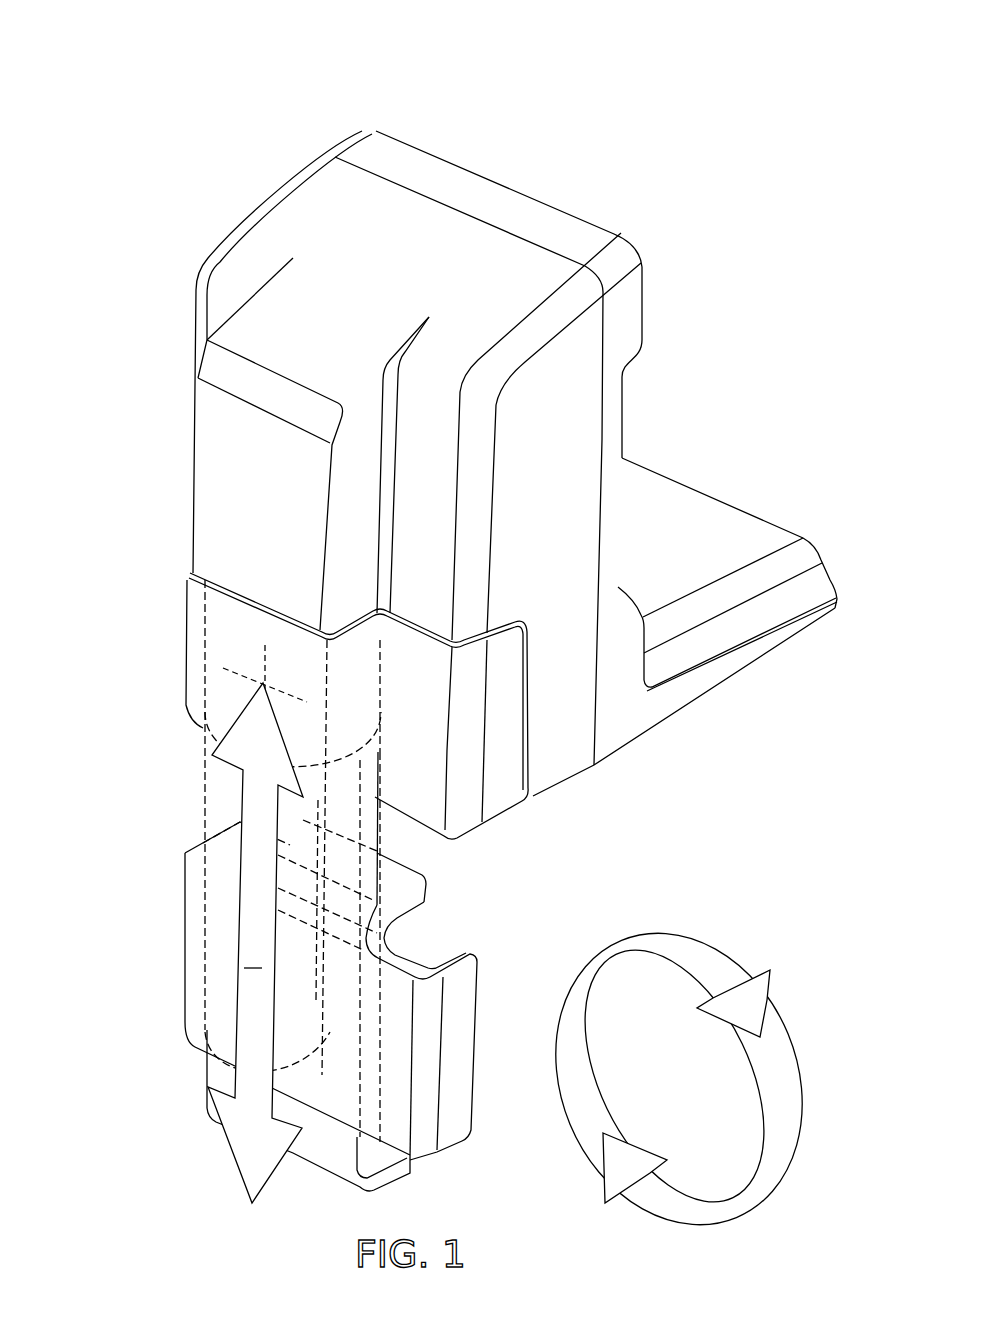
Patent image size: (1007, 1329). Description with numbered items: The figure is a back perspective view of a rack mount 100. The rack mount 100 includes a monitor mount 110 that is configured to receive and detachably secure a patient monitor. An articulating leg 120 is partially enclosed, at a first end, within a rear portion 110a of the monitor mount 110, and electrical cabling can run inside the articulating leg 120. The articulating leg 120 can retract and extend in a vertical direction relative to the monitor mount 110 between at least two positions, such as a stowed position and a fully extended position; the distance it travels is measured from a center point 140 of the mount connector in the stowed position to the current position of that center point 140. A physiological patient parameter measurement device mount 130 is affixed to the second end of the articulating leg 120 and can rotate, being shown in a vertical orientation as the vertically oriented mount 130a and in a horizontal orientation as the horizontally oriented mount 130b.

The rack mount 100 is at (715, 44).
The monitor mount 110 is at (538, 200).
The rear portion of the monitor mount 110a is at (203, 488).
The articulating leg 120 is at (208, 807).
The physiological patient parameter measurement device mount 130 is at (494, 810).
The vertically oriented physiological patient parameter measurement device mount 130a is at (416, 888).
The horizontally oriented physiological patient parameter measurement device mount 130b is at (476, 1062).
The center point 140 is at (263, 683).